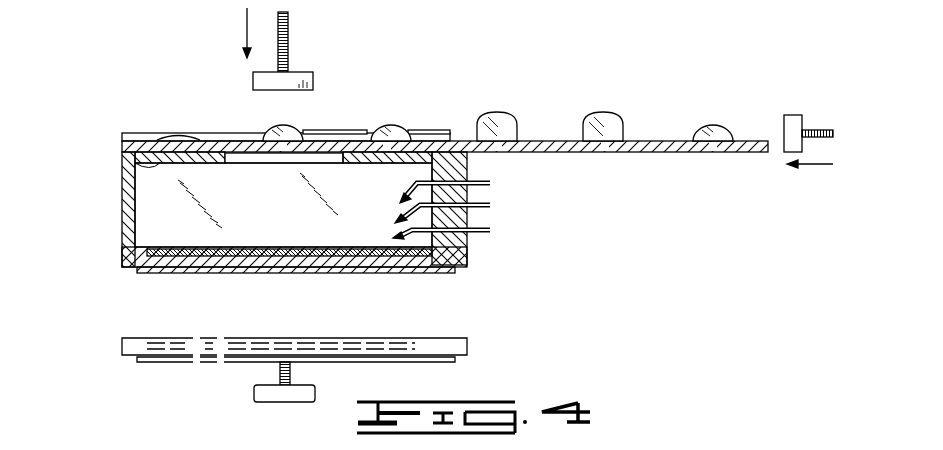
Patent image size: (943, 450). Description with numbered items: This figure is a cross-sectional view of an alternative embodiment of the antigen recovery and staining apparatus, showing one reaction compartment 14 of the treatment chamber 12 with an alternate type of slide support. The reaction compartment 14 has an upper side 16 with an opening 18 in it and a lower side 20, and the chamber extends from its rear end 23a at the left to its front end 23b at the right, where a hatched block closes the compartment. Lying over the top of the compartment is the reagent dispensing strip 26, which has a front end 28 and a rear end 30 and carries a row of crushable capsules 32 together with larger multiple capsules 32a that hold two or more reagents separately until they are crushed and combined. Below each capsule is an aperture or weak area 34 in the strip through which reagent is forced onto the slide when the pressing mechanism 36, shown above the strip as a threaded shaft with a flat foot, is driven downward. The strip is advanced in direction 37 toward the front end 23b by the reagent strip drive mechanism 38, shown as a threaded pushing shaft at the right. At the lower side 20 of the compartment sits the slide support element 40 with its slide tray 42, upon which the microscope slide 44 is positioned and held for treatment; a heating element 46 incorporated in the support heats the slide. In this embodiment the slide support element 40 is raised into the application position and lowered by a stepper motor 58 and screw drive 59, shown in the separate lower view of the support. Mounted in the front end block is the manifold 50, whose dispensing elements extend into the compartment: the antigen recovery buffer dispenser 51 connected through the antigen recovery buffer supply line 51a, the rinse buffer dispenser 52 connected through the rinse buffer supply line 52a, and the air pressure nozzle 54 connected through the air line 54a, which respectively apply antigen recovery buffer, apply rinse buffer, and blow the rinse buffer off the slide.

The treatment chamber 12 is at (122, 178).
The reaction compartment 14 is at (155, 213).
The upper side 16 is at (130, 160).
The opening 18 is at (250, 162).
The lower side 20 is at (168, 234).
The rear end 23a is at (122, 192).
The front end 23b is at (472, 166).
The reagent dispensing strip 26 is at (222, 140).
The front end 28 is at (124, 140).
The rear end 30 is at (772, 152).
The capsule 32 is at (298, 125).
The multiple capsule 32a is at (499, 112).
The aperture or weak area 34 is at (283, 145).
The pressing mechanism 36 is at (289, 40).
The direction 37 is at (820, 168).
The reagent strip drive mechanism 38 is at (822, 128).
The slide support element 40 is at (122, 350).
The slide tray 42 is at (355, 340).
The microscope slide 44 is at (306, 250).
The heating element 46 is at (266, 273).
The manifold 50 is at (470, 193).
The antigen recovery buffer dispenser 51 is at (412, 207).
The antigen recovery buffer supply line 51a is at (495, 207).
The rinse buffer dispenser 52 is at (413, 185).
The rinse buffer supply line 52a is at (497, 180).
The air pressure nozzle 54 is at (408, 231).
The air line 54a is at (490, 235).
The stepper motor 58 is at (254, 396).
The screw drive 59 is at (278, 372).